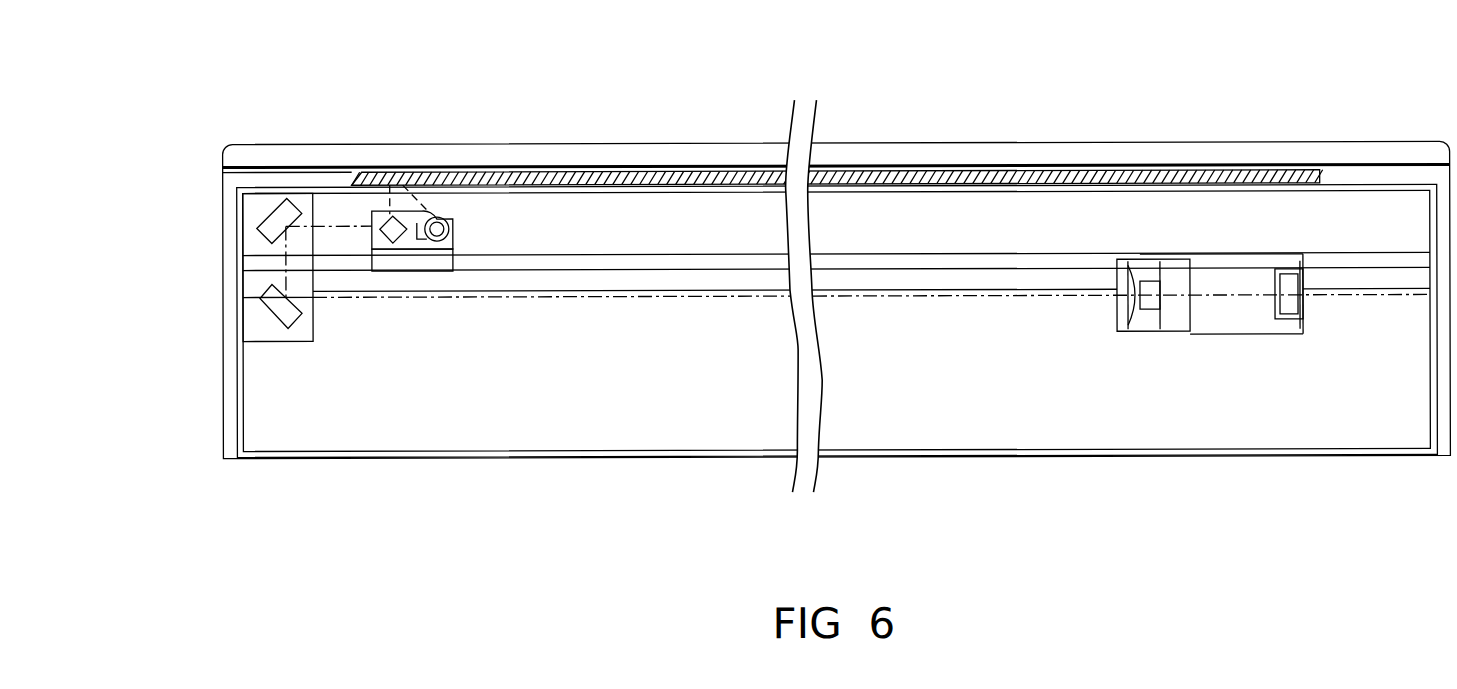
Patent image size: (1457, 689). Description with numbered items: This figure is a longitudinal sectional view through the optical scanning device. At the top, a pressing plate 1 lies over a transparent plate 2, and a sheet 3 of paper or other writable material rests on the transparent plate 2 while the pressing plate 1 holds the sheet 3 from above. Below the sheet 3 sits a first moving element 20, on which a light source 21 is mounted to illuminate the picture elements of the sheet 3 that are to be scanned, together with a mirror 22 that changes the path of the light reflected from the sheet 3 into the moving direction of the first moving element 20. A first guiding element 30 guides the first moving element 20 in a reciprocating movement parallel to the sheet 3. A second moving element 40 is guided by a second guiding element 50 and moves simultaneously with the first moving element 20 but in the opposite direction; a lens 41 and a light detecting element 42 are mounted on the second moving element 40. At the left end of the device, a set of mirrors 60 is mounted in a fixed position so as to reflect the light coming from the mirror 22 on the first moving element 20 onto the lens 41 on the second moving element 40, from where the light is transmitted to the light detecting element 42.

The pressing plate 1 is at (1073, 152).
The transparent plate 2 is at (1010, 167).
The sheet 3 is at (1038, 167).
The first moving element 20 is at (410, 280).
The light source 21 is at (453, 226).
The mirror 22 is at (385, 224).
The first guiding element 30 is at (678, 266).
The second moving element 40 is at (1247, 312).
The lens 41 is at (1137, 325).
The light detecting element 42 is at (1290, 323).
The second guiding element 50 is at (582, 287).
The set of mirrors 60 is at (270, 332).